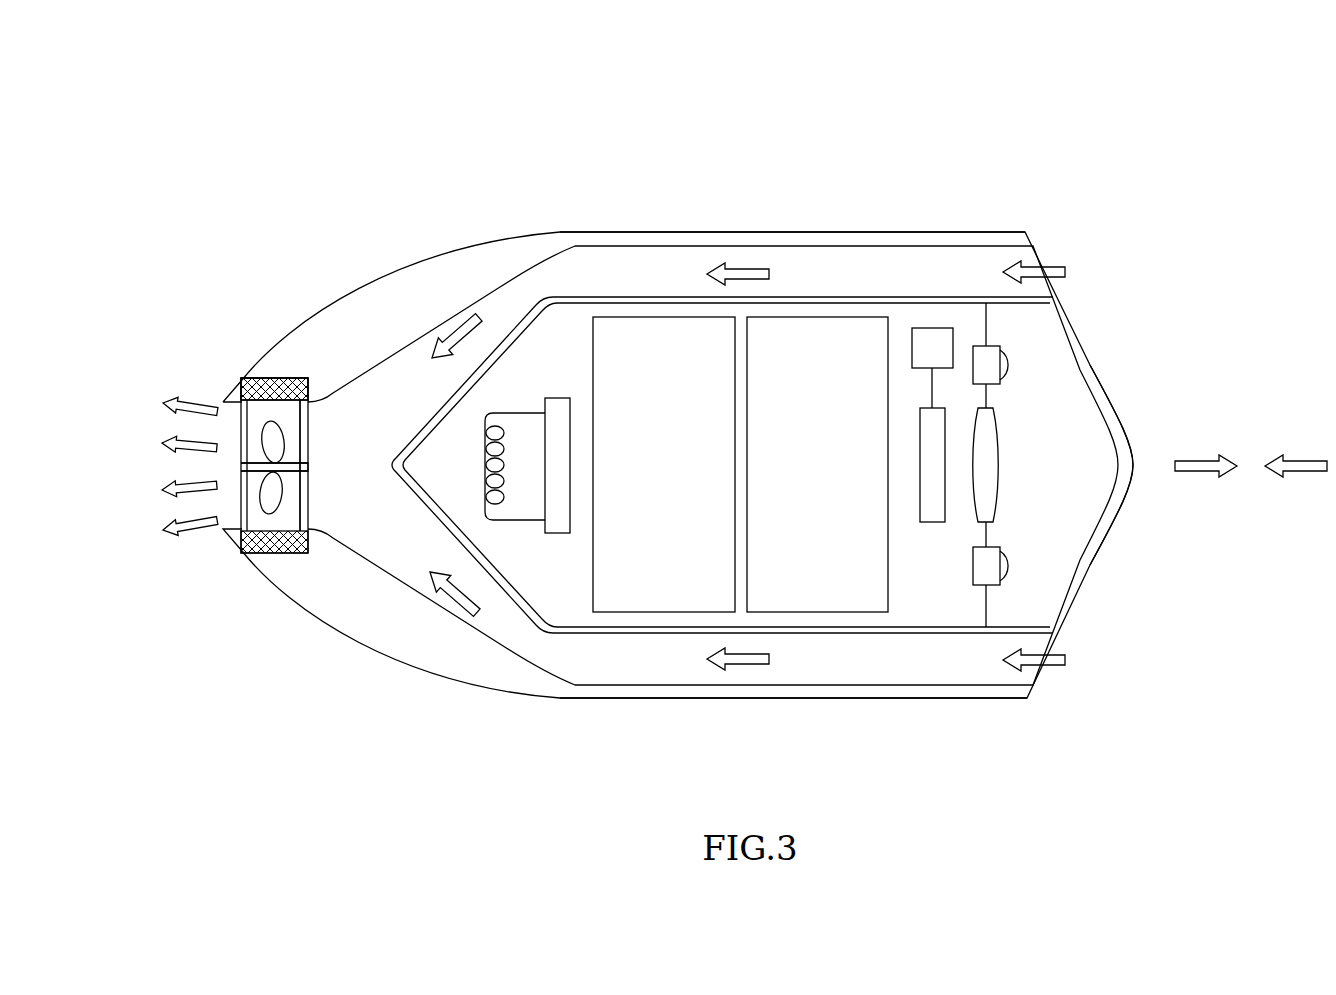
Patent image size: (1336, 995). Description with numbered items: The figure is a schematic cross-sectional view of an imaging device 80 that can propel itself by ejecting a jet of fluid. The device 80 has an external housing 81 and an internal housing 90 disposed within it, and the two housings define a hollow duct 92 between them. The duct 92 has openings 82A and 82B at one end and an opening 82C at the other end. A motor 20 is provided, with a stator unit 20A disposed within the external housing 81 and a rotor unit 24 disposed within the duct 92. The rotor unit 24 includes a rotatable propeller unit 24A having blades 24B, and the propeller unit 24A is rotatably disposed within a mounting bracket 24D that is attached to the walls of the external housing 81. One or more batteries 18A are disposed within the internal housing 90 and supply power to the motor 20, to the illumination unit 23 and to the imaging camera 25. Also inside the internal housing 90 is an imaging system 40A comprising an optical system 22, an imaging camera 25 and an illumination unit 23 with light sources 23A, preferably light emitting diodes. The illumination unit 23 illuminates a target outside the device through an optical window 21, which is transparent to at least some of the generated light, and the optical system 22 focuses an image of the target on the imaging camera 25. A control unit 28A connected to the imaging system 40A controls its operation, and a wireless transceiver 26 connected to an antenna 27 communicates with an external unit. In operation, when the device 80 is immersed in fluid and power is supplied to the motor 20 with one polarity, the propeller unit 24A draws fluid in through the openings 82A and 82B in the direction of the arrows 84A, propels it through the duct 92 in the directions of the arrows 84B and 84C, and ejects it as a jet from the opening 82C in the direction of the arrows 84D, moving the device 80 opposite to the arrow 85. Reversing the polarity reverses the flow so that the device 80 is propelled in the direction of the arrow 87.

The imaging device 80 is at (378, 130).
The external housing 81 is at (803, 228).
The duct 92 is at (604, 268).
The internal housing 90 is at (914, 642).
The illumination unit 23 is at (1036, 330).
The optical window 21 is at (1137, 403).
The opening 82A is at (1016, 252).
The opening 82B is at (1015, 678).
The opening 82C is at (226, 467).
The arrows 84A is at (1065, 270).
The arrows 84B is at (745, 268).
The arrows 84C is at (452, 323).
The arrows 84D is at (178, 437).
The arrow 85 is at (1208, 458).
The arrow 87 is at (1320, 458).
The motor 20 is at (273, 565).
The stator unit 20A is at (272, 378).
The rotor unit 24 is at (253, 513).
The rotatable propeller unit 24A is at (296, 482).
The blades 24B is at (270, 420).
The mounting bracket 24D is at (308, 428).
The wireless transceiver 26 is at (555, 398).
The antenna 27 is at (485, 462).
The batteries 18A is at (690, 468).
The control unit 28A is at (935, 328).
The imaging camera 25 is at (930, 522).
The optical system 22 is at (997, 445).
The light sources 23A is at (1008, 365).
The imaging system 40A is at (1025, 478).